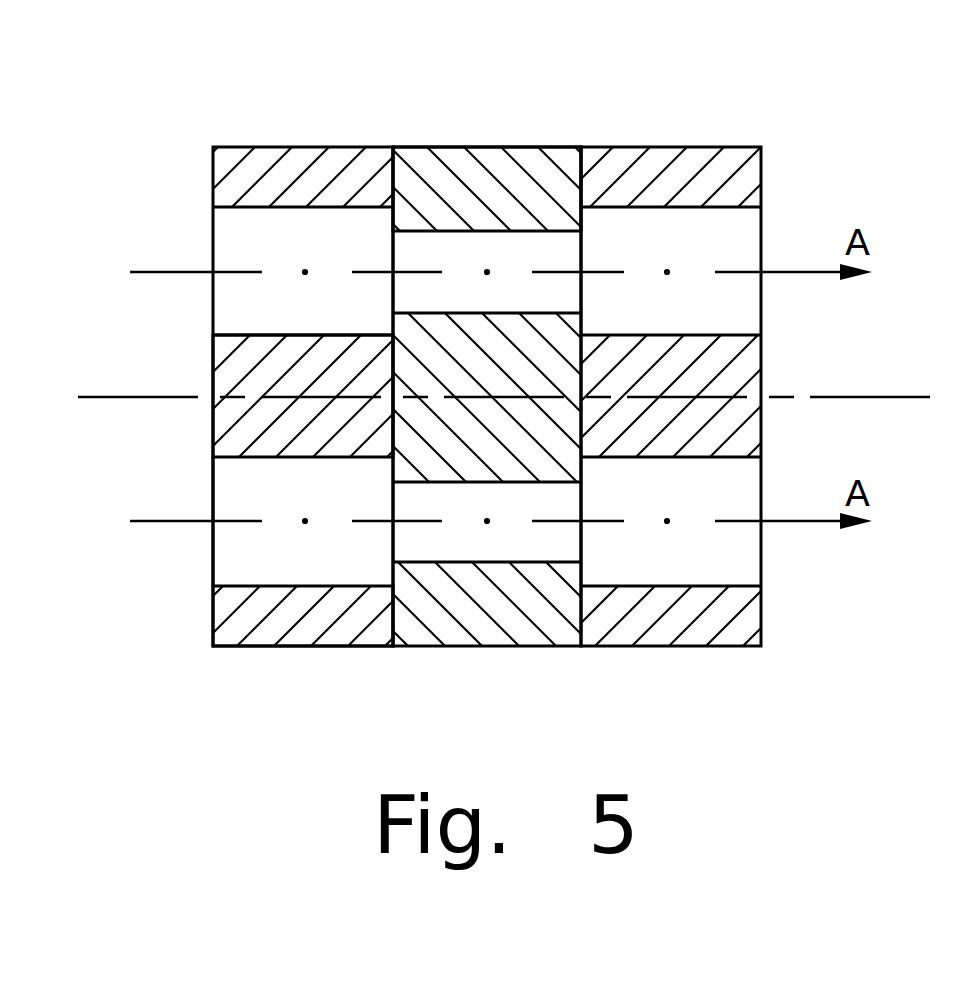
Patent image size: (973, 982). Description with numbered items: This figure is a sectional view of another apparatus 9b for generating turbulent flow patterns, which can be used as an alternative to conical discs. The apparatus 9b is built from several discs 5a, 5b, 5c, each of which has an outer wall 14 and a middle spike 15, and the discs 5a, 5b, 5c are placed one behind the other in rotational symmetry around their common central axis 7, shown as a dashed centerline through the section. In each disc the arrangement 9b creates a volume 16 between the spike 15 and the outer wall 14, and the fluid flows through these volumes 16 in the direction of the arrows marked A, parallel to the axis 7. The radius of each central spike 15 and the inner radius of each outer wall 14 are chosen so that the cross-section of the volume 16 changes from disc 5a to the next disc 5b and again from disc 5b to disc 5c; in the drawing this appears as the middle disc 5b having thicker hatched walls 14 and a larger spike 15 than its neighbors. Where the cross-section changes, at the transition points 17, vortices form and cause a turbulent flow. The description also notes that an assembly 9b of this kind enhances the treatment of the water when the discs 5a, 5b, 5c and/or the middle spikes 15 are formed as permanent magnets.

The apparatus for generating turbulent flow patterns 9b is at (562, 102).
The disc 5a is at (268, 434).
The disc 5b is at (464, 400).
The disc 5c is at (655, 640).
The outer wall 14 is at (228, 645).
The middle spike 15 is at (222, 426).
The volume 16 is at (225, 568).
The transition points 17 is at (391, 208).
The central axis 7 is at (910, 398).